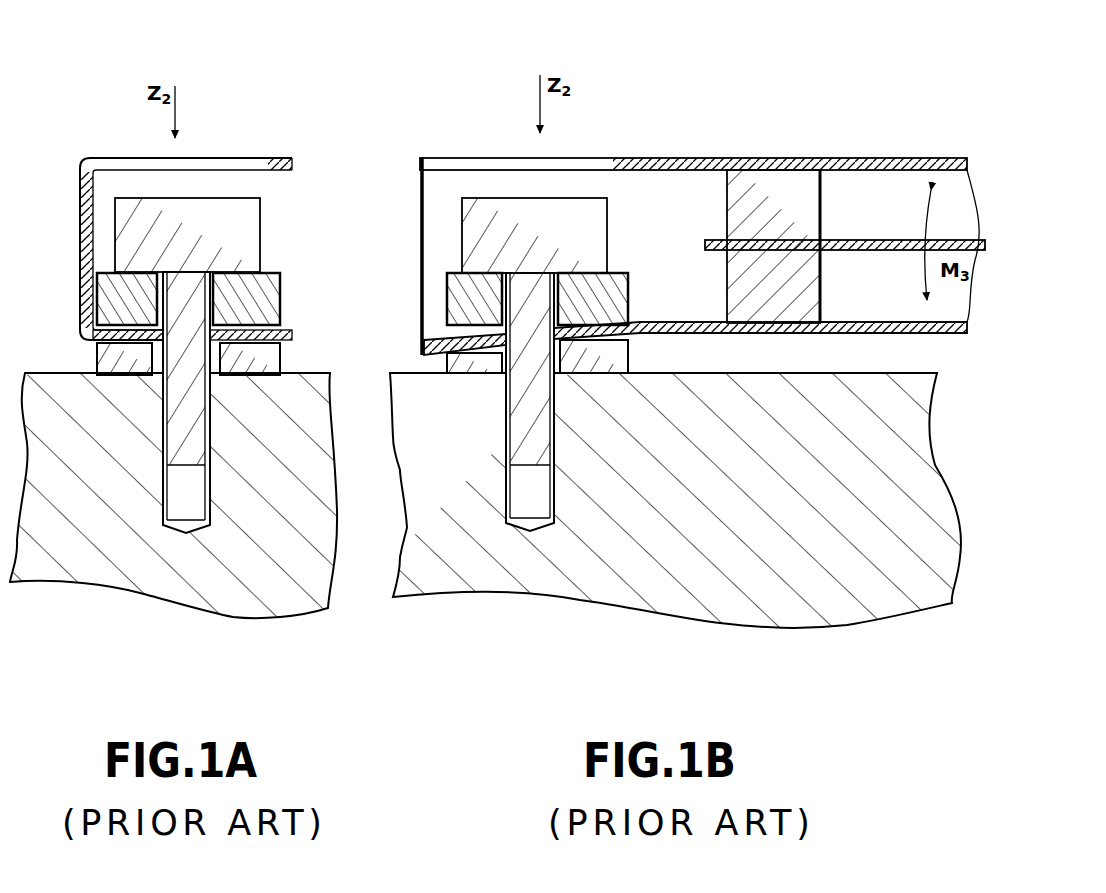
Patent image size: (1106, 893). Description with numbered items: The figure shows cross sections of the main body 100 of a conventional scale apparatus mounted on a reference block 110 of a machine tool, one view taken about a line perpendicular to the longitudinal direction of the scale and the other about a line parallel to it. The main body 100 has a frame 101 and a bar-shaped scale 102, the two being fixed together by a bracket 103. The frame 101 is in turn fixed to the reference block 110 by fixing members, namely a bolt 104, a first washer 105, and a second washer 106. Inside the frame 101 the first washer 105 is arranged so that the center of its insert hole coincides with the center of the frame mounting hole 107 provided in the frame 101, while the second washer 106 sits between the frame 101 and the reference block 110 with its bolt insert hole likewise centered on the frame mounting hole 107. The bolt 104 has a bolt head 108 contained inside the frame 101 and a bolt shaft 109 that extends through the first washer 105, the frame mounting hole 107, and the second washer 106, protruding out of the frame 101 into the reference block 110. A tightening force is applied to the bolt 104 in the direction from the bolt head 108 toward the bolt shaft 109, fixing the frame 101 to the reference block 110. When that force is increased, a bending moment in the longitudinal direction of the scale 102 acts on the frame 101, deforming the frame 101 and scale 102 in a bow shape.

In FIG. 1A, the main body 100 is at (214, 96).
In FIG. 1B, the main body 100 is at (672, 104).
In FIG. 1A, the frame 101 is at (288, 158).
In FIG. 1B, the frame 101 is at (870, 158).
In FIG. 1B, the bar-shaped scale 102 is at (953, 238).
In FIG. 1B, the bracket 103 is at (823, 207).
In FIG. 1A, the bolt 104 is at (262, 230).
In FIG. 1B, the bolt 104 is at (493, 197).
In FIG. 1A, the first washer 105 is at (280, 280).
In FIG. 1B, the first washer 105 is at (447, 287).
In FIG. 1A, the second washer 106 is at (282, 355).
In FIG. 1B, the second washer 106 is at (447, 370).
In FIG. 1A, the frame mounting hole 107 is at (222, 328).
In FIG. 1B, the frame mounting hole 107 is at (503, 336).
In FIG. 1A, the bolt head 108 is at (212, 198).
In FIG. 1B, the bolt head 108 is at (550, 198).
In FIG. 1A, the bolt shaft 109 is at (177, 305).
In FIG. 1B, the bolt shaft 109 is at (528, 293).
In FIG. 1A, the reference block 110 is at (296, 618).
In FIG. 1B, the reference block 110 is at (812, 622).